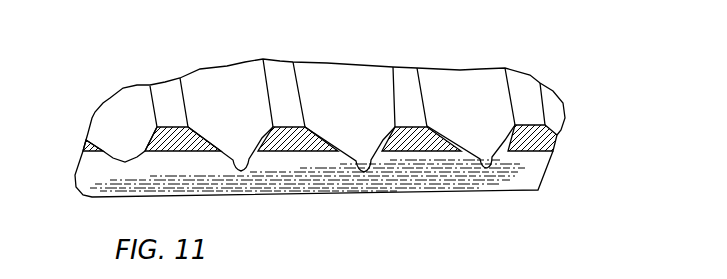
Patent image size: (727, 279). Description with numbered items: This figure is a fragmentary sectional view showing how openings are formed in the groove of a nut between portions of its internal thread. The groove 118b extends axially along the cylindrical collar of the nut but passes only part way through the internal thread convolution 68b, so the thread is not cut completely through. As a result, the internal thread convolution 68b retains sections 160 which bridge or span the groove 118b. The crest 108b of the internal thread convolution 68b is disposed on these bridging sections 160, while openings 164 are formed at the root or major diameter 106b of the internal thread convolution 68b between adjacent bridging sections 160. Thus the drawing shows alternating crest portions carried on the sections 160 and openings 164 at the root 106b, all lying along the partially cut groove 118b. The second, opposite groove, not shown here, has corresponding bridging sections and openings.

The root or major diameter 106b is at (117, 118).
The crest 108b is at (167, 95).
The openings 164 is at (253, 138).
The sections 160 is at (196, 141).
The groove 118b is at (533, 178).
The internal thread convolution 68b is at (533, 99).